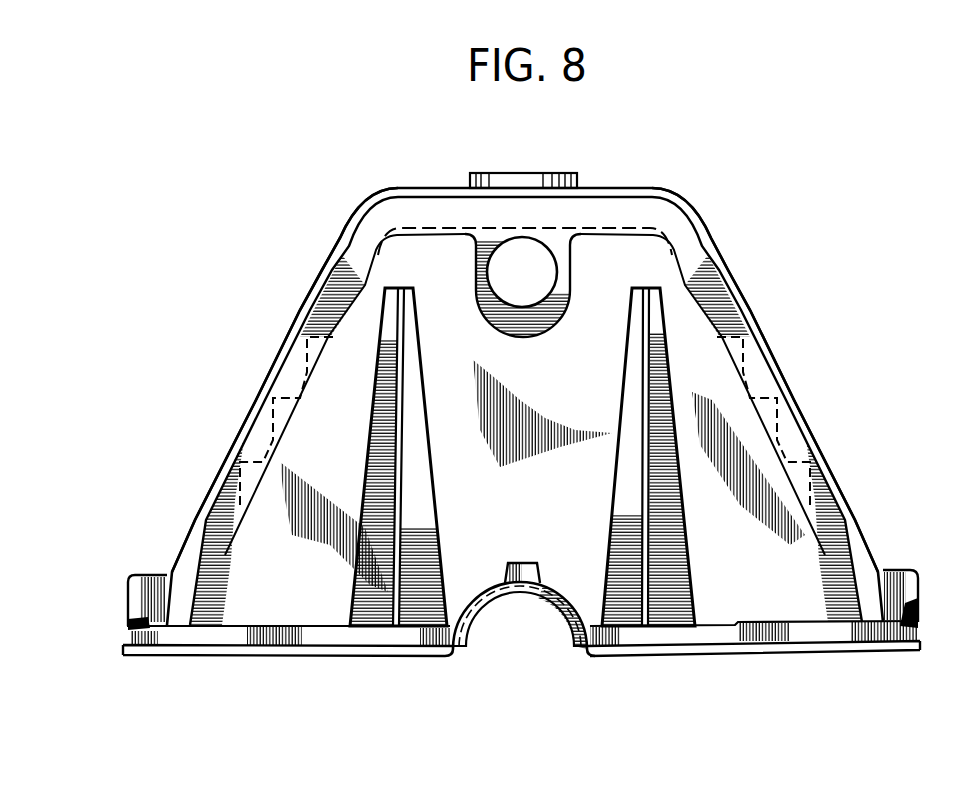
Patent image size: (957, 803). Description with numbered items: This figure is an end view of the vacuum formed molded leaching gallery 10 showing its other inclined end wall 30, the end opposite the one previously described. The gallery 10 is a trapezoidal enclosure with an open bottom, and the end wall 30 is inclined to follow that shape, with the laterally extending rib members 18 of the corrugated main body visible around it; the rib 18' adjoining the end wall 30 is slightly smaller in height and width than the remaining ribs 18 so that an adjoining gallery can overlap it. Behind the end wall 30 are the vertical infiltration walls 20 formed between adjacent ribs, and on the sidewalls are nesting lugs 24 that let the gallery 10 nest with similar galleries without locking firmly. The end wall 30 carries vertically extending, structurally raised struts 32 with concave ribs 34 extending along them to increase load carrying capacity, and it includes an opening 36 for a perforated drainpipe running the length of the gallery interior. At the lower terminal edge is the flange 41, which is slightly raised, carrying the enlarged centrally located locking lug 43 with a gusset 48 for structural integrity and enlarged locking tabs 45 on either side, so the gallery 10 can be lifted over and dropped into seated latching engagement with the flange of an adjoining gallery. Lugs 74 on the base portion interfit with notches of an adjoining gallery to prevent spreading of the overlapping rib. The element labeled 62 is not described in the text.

The leaching gallery 10 is at (334, 224).
The rib member 18 is at (765, 359).
The rib 18' is at (285, 363).
The top boss 62 is at (522, 173).
The opening 36 is at (519, 237).
The infiltration wall 20 is at (283, 366).
The strut 32 is at (420, 522).
The concave rib 34 is at (402, 375).
The end wall 30 is at (755, 585).
The gusset 48 is at (519, 562).
The locking lug 43 is at (450, 640).
The locking tab 45 is at (240, 634).
The flange 41 is at (636, 640).
The nesting lug 24 is at (156, 574).
The lug 74 is at (135, 622).